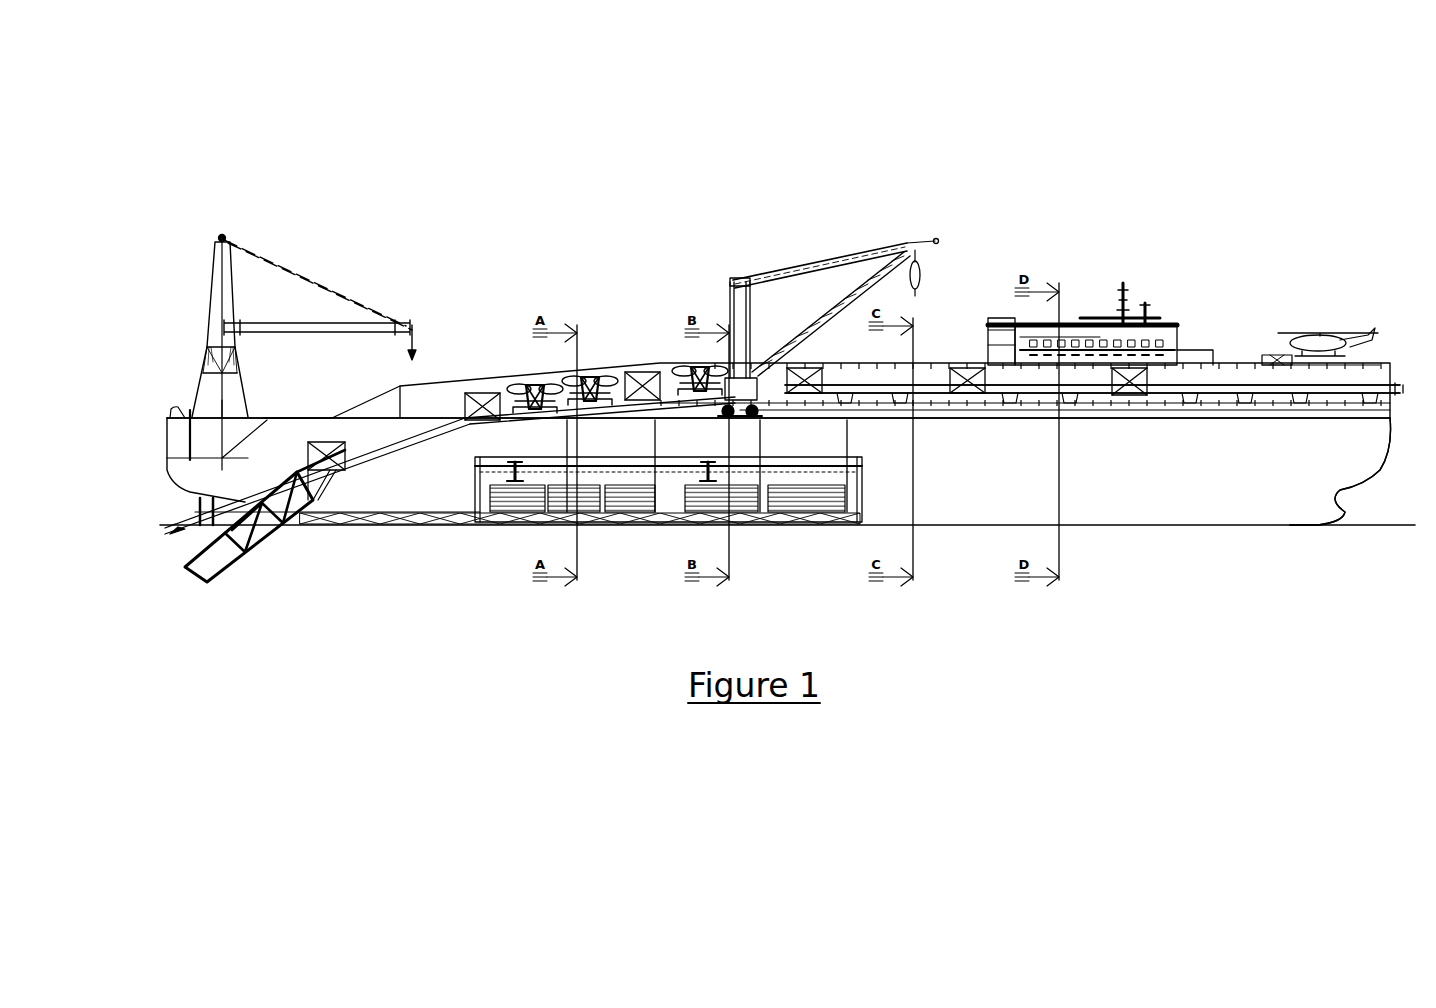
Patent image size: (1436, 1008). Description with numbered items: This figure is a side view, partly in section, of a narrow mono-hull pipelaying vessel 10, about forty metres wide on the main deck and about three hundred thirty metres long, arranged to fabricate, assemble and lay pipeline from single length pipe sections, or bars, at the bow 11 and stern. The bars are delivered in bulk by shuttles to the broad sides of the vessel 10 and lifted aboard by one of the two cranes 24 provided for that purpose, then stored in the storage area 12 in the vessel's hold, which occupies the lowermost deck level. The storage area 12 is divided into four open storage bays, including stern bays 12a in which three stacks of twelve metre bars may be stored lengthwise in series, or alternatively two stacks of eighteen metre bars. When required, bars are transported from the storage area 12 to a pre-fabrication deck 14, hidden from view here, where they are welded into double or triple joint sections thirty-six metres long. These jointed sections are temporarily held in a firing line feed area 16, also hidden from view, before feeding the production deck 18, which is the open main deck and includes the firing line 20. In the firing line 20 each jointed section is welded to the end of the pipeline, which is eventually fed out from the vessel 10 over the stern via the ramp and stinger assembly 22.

The pipelaying vessel 10 is at (388, 600).
The bow 11 is at (1333, 538).
The storage area 12 is at (614, 524).
The stern bay 12a is at (507, 500).
The pre-fabrication deck 14 is at (797, 452).
The firing line feed area 16 is at (1132, 405).
The production deck 18 is at (908, 400).
The firing line 20 is at (612, 378).
The ramp and stinger assembly 22 is at (352, 472).
The cranes 24 is at (803, 270).